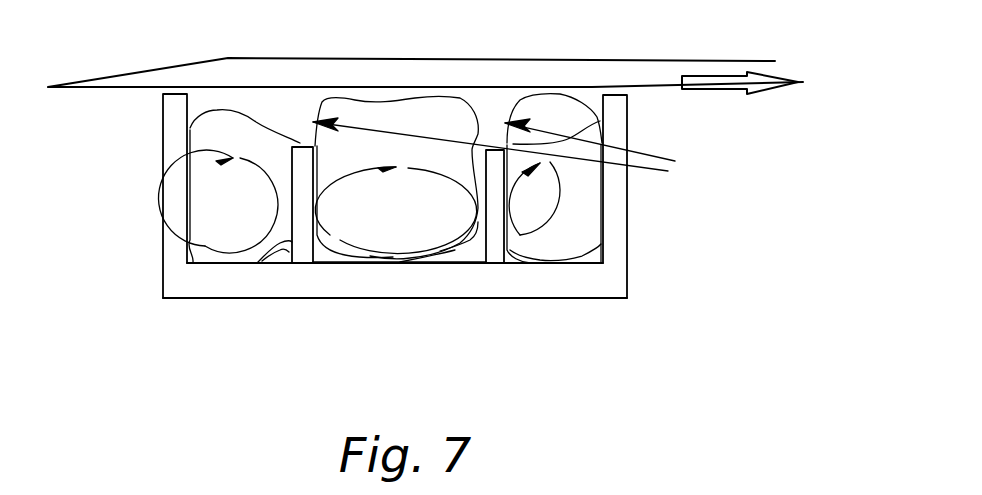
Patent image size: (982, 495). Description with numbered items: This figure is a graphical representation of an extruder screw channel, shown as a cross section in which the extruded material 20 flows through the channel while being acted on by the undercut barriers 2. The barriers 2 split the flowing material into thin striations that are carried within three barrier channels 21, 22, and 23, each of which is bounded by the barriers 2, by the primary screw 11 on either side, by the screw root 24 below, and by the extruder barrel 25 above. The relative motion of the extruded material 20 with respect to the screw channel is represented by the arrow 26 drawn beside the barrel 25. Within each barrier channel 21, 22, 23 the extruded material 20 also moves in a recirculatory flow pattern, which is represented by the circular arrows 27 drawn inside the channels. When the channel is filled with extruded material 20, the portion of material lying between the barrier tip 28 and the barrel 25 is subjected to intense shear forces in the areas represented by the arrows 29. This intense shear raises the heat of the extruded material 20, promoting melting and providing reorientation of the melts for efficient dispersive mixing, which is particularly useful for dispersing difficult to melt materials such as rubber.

The undercut barriers 2 is at (260, 263).
The primary screw 11 is at (163, 233).
The extruded material 20 is at (222, 118).
The barrier channel 21 is at (212, 258).
The barrier channel 22 is at (330, 260).
The barrier channel 23 is at (580, 255).
The screw root 24 is at (390, 265).
The extruder barrel 25 is at (313, 72).
The arrow 26 is at (783, 72).
The arrows 27 is at (198, 180).
The barrier tip 28 is at (600, 121).
The arrows 29 is at (417, 137).